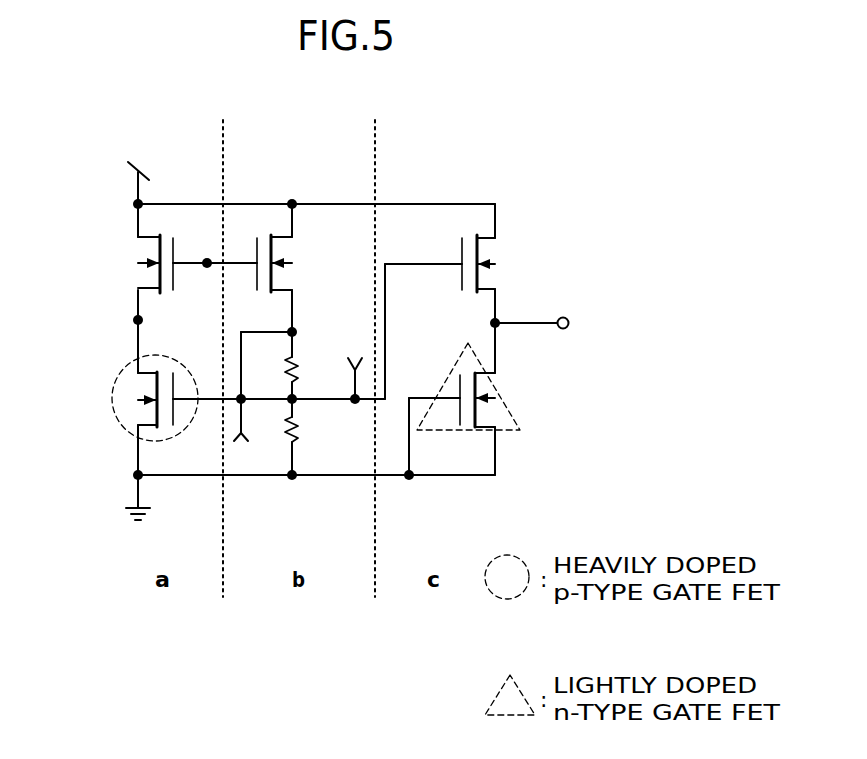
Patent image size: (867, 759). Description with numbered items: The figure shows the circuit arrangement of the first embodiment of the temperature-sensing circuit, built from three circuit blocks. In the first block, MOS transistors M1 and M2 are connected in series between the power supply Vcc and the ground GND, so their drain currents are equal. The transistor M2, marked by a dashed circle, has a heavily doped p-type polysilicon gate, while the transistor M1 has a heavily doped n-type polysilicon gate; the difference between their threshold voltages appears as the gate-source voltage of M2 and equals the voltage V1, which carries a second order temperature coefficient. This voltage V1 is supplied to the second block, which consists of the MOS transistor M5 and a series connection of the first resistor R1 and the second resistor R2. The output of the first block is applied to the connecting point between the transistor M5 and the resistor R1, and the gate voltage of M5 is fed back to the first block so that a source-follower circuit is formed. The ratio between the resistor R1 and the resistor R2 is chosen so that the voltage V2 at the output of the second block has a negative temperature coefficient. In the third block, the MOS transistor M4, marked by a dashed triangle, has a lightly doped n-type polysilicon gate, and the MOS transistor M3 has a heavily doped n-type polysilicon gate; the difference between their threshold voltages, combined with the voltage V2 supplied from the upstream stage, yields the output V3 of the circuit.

The MOS transistor M1 is at (135, 252).
The MOS transistor M2 is at (143, 385).
The MOS transistor M3 is at (495, 246).
The MOS transistor M4 is at (495, 388).
The MOS transistor M5 is at (288, 245).
The first resistor R1 is at (300, 373).
The second resistor R2 is at (300, 432).
The voltage V1 is at (239, 452).
The voltage V2 is at (356, 351).
The output V3 is at (552, 325).
The power supply Vcc is at (138, 172).
The ground GND is at (137, 528).